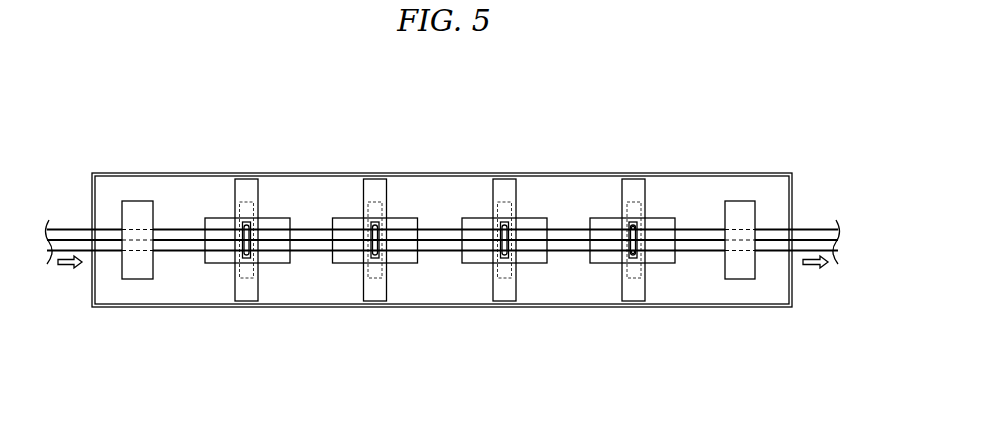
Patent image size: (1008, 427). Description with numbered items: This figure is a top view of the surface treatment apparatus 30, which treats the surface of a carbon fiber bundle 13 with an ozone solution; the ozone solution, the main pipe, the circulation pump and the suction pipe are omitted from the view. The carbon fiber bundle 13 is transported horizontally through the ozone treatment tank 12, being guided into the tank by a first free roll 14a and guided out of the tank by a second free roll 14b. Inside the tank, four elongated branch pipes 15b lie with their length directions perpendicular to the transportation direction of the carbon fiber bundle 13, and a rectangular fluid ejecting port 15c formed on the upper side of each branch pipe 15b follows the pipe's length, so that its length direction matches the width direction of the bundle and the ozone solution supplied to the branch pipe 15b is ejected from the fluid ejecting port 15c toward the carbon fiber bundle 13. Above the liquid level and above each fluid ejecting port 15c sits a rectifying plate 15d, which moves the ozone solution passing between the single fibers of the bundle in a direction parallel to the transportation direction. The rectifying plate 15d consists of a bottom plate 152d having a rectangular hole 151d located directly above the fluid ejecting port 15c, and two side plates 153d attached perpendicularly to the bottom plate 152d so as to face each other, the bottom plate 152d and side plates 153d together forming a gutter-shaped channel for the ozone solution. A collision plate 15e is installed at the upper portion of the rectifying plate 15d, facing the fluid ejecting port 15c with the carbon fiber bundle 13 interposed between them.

The surface treatment apparatus 30 is at (498, 138).
The ozone treatment tank 12 is at (290, 307).
The carbon fiber bundle 13 is at (60, 250).
The first free roll 14a is at (148, 213).
The second free roll 14b is at (742, 210).
The branch pipe 15b is at (245, 196).
The fluid ejecting port 15c is at (262, 222).
The rectifying plate 15d is at (745, 379).
The collision plate 15e is at (633, 194).
The rectangular hole 151d is at (633, 254).
The bottom plate 152d is at (663, 244).
The side plate 153d is at (660, 264).